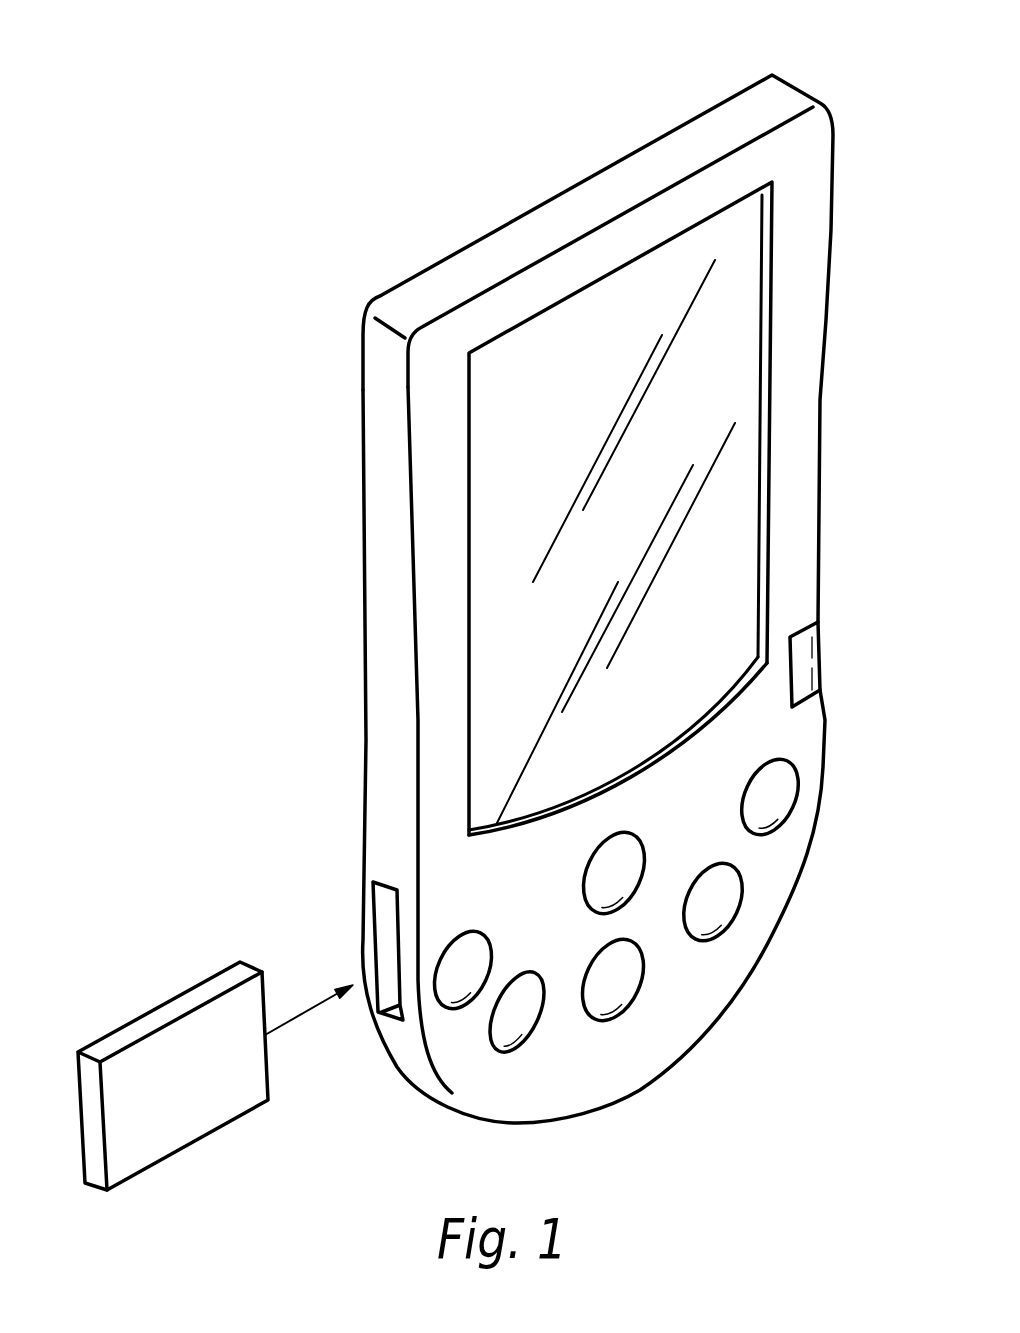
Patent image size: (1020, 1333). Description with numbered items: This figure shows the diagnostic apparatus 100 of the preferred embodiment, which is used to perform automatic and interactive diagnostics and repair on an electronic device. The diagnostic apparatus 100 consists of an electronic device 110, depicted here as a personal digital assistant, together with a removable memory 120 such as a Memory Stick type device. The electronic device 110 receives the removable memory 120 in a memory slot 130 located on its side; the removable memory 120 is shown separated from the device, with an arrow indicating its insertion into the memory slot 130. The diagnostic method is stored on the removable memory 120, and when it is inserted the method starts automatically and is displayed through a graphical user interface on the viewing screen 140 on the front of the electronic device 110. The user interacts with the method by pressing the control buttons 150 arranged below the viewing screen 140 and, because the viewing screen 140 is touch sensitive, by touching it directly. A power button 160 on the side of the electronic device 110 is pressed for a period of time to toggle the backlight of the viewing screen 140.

The diagnostic apparatus 100 is at (165, 185).
The electronic device 110 is at (686, 121).
The removable memory 120 is at (135, 1035).
The memory slot 130 is at (375, 908).
The viewing screen 140 is at (685, 377).
The control buttons 150 is at (743, 793).
The power button 160 is at (800, 656).